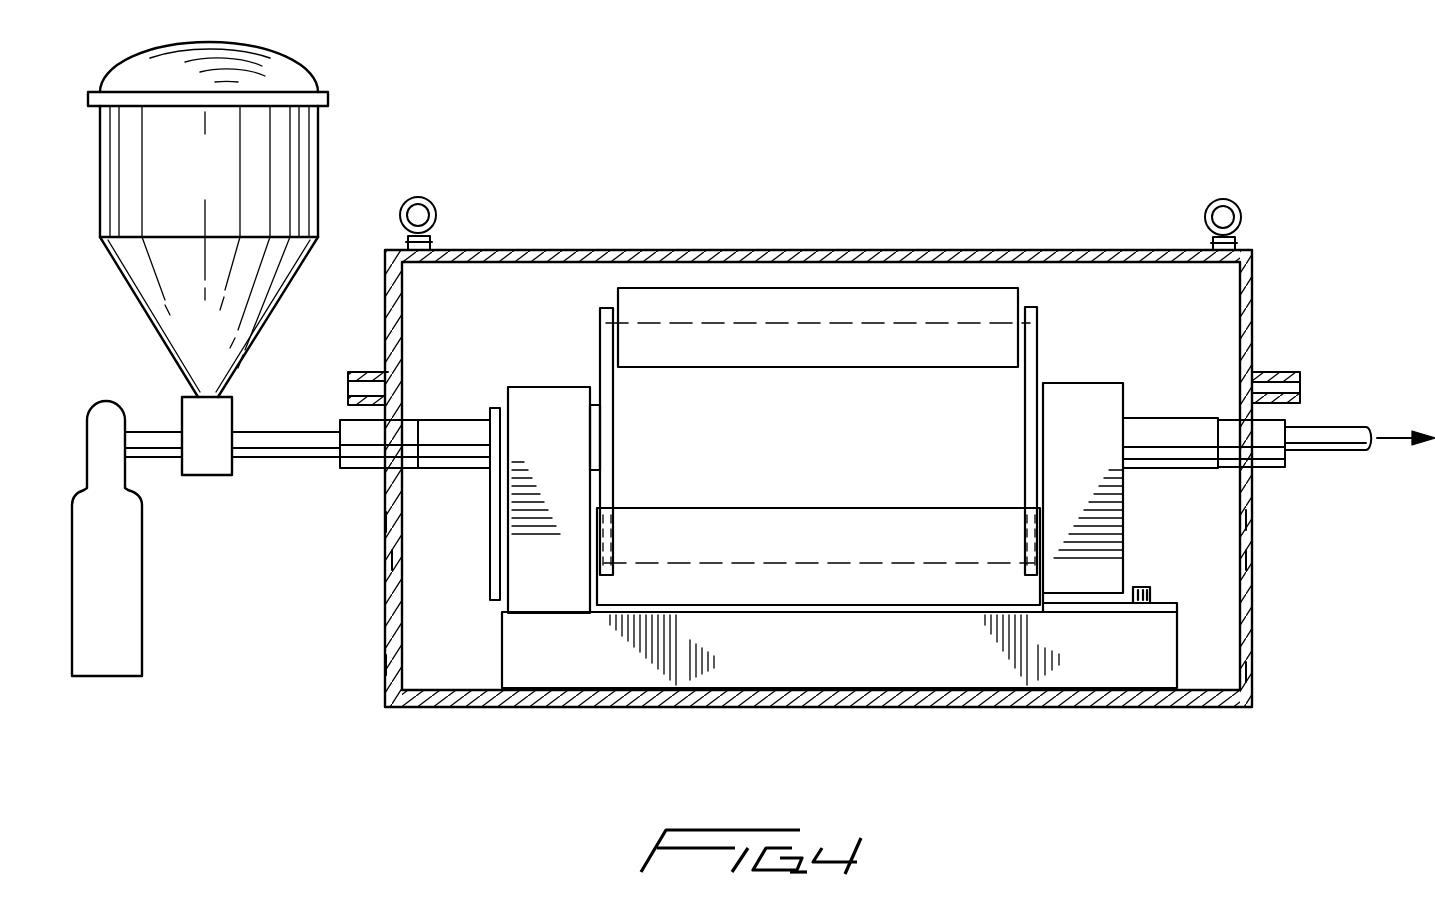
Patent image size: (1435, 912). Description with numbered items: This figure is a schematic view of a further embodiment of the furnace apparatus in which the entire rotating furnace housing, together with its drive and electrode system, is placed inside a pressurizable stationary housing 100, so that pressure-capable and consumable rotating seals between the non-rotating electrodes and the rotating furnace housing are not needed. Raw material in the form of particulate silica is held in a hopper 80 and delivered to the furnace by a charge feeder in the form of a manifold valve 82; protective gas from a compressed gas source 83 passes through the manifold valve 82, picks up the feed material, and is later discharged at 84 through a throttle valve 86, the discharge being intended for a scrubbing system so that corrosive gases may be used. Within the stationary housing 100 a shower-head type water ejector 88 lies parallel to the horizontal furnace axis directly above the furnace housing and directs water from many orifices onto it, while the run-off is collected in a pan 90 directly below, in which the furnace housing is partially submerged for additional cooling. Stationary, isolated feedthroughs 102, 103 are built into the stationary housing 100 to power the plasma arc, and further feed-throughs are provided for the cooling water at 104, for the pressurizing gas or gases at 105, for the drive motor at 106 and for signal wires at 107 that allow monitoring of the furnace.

The hopper 80 is at (230, 186).
The manifold valve 82 is at (230, 455).
The compressed gas source 83 is at (130, 597).
The gas discharge 84 is at (1402, 437).
The throttle valve 86 is at (1310, 450).
The water ejector 88 is at (826, 367).
The pan 90 is at (826, 508).
The pressurizable stationary housing 100 is at (760, 248).
The feedthrough 102 is at (390, 522).
The feedthrough 103 is at (1255, 520).
The cooling water feed-through 104 is at (396, 666).
The pressurizing gas feed-through 105 is at (1250, 672).
The drive motor feed-through 106 is at (390, 560).
The signal wire feed-through 107 is at (1258, 558).